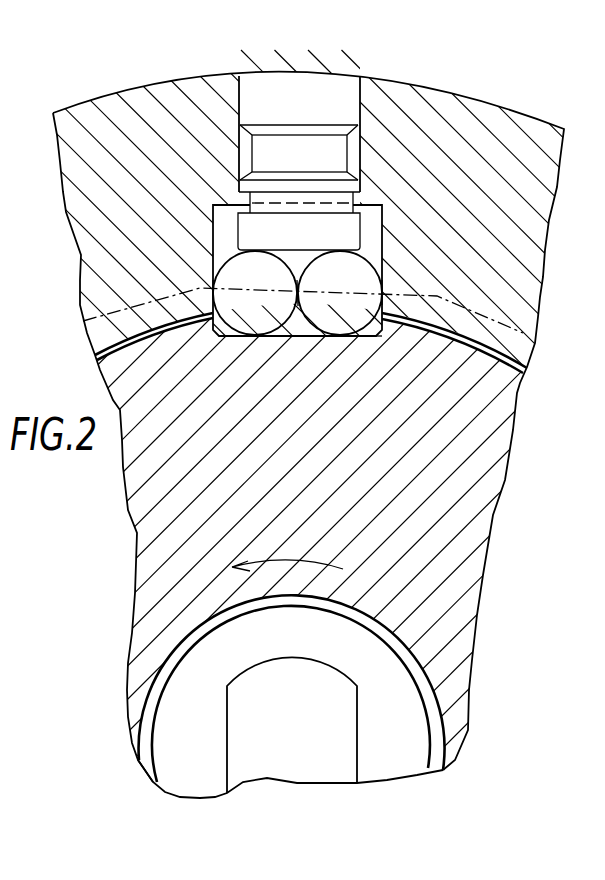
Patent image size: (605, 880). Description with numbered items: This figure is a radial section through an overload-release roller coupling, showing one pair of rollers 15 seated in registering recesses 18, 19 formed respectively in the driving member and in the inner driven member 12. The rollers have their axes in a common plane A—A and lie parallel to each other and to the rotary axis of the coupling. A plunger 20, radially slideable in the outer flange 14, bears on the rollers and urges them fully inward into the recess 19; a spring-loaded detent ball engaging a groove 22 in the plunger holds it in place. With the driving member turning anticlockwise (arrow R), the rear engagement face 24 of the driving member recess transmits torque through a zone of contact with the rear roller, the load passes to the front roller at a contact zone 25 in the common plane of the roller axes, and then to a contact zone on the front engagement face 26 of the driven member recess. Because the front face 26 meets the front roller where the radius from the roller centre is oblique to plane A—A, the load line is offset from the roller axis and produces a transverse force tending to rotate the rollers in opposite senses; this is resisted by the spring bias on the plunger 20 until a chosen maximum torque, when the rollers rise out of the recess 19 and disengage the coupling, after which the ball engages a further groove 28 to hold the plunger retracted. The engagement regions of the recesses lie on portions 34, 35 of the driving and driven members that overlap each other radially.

The rotor 12 is at (308, 448).
The outer flange 14 is at (475, 96).
The balls 15 is at (250, 308).
The recess 18 is at (385, 222).
The recess 19 is at (378, 338).
The plunger 20 is at (280, 103).
The groove 22 is at (253, 150).
The rear engagement face 24 is at (385, 302).
The contact zone 25 is at (283, 300).
The front engagement face 26 is at (210, 290).
The further groove 28 is at (360, 197).
The portion of driving member 34 is at (505, 370).
The portion of driven member 35 is at (515, 346).